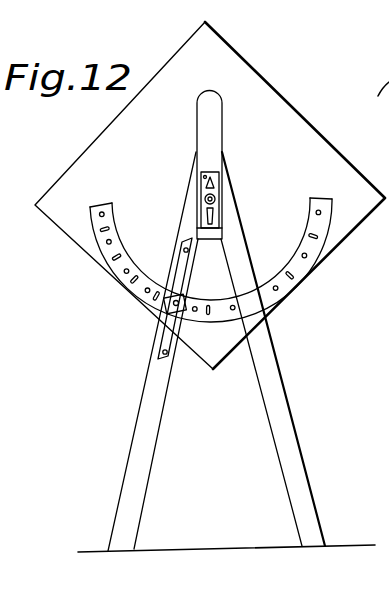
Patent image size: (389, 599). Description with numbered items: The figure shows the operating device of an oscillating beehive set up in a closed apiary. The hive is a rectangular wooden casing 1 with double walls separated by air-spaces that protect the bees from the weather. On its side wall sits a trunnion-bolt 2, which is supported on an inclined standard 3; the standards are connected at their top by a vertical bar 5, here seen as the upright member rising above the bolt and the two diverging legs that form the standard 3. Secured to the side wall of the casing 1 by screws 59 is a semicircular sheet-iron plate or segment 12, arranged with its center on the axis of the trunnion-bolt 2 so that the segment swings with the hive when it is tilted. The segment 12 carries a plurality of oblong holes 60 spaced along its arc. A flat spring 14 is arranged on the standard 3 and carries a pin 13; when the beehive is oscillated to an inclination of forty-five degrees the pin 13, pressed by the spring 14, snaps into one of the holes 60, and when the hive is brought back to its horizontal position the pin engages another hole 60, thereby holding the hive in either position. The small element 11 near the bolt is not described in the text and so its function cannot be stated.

The rectangular casing 1 is at (287, 120).
The trunnion-bolt 2 is at (219, 196).
The inclined standard 3 is at (226, 352).
The vertical bar 5 is at (214, 151).
The pin 11 is at (203, 177).
The semicircular sheet-iron segment 12 is at (115, 237).
The pin 13 is at (168, 308).
The flat spring 14 is at (160, 348).
The screws 59 is at (104, 213).
The oblong holes 60 is at (102, 228).